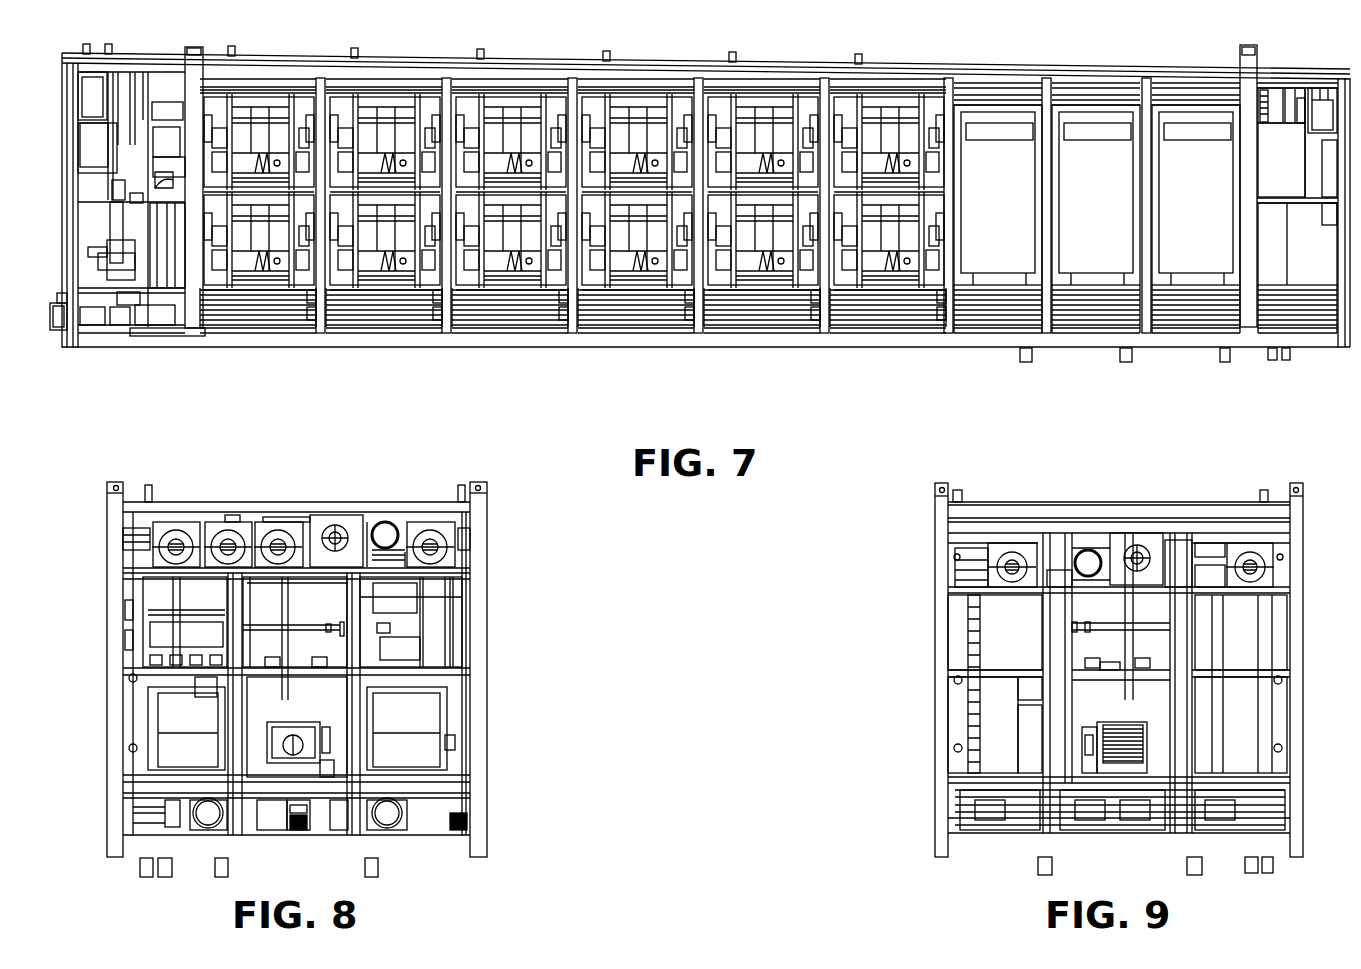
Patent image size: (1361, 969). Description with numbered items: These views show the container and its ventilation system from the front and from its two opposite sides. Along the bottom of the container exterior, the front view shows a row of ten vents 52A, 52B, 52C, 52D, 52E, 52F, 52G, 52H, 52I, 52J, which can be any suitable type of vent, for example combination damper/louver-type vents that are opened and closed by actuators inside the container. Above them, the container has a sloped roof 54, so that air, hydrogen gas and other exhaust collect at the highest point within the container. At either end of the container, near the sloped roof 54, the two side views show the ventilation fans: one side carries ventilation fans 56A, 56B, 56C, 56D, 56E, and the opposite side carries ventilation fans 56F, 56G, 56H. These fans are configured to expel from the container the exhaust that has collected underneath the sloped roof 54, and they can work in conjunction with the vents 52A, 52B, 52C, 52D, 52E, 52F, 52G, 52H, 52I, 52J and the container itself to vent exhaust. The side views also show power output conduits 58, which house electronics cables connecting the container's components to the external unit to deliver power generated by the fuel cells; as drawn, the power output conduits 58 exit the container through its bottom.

In FIG. 7, the vent 52A is at (241, 326).
In FIG. 7, the vent 52B is at (383, 326).
In FIG. 7, the vent 52C is at (498, 326).
In FIG. 7, the vent 52D is at (605, 326).
In FIG. 7, the vent 52E is at (737, 326).
In FIG. 7, the vent 52F is at (853, 326).
In FIG. 7, the vent 52G is at (977, 326).
In FIG. 7, the vent 52H is at (1090, 326).
In FIG. 7, the vent 52I is at (1190, 326).
In FIG. 7, the vent 52J is at (1300, 320).
In FIG. 7, the sloped roof 54 is at (138, 53).
In FIG. 8, the ventilation fan 56A is at (175, 522).
In FIG. 8, the ventilation fan 56B is at (226, 522).
In FIG. 8, the ventilation fan 56C is at (281, 522).
In FIG. 8, the ventilation fan 56D is at (337, 515).
In FIG. 8, the ventilation fan 56E is at (429, 522).
In FIG. 9, the ventilation fan 56F is at (1005, 543).
In FIG. 9, the ventilation fan 56G is at (1137, 533).
In FIG. 9, the ventilation fan 56H is at (1250, 543).
In FIG. 8, the power output conduit 58 is at (215, 877).
In FIG. 9, the power output conduit 58 is at (1038, 875).